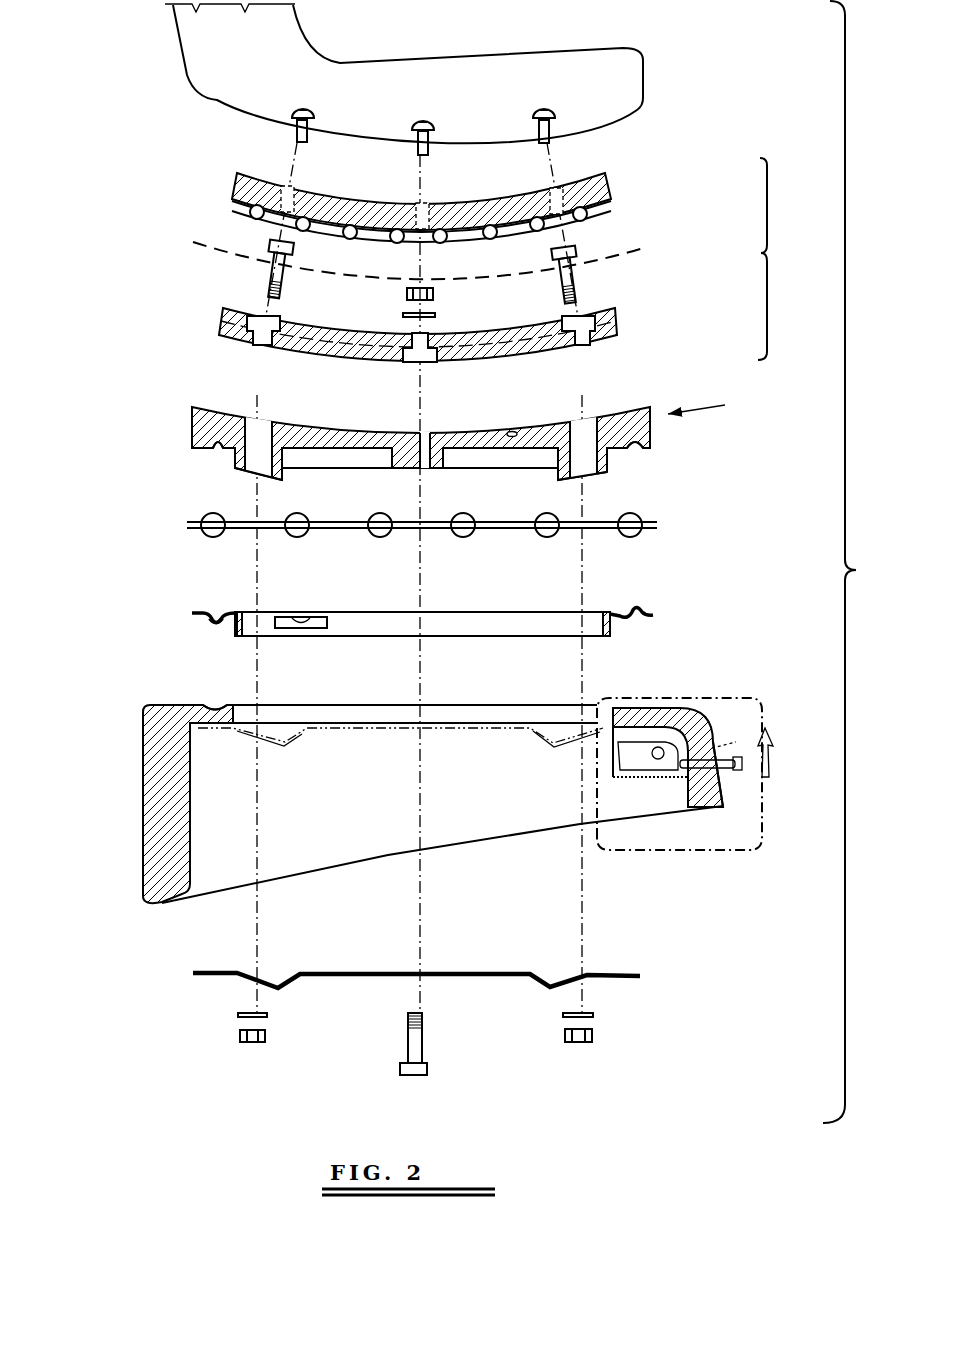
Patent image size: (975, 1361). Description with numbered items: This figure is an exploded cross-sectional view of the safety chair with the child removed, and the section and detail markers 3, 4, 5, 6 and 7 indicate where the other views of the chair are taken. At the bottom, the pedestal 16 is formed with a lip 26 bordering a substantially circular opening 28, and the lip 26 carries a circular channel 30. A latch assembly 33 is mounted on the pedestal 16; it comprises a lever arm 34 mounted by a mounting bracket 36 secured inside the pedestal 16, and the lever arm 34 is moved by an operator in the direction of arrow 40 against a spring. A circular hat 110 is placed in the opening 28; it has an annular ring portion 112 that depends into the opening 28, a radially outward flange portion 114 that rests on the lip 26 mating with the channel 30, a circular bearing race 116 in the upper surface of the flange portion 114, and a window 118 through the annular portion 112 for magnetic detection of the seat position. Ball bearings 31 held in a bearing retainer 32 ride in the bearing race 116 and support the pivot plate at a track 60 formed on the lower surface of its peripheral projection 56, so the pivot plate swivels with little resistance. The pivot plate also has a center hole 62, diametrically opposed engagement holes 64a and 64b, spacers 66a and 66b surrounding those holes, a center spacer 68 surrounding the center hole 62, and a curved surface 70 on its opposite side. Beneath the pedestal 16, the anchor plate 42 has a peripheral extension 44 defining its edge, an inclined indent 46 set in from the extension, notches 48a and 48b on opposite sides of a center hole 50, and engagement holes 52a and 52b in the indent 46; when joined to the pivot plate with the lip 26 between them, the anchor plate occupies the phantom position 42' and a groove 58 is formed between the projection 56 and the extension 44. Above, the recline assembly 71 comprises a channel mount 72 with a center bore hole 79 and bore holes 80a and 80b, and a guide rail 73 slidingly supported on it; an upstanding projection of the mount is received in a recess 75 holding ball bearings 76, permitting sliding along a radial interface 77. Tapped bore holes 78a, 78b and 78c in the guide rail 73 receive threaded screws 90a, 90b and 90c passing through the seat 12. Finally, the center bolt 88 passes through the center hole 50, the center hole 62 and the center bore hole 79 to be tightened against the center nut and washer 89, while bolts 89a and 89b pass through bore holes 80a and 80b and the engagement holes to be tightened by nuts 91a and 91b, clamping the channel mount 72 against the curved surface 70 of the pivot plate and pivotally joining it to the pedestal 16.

The seat 12 is at (650, 59).
The threaded screw 90a is at (304, 108).
The threaded screw 90b is at (424, 119).
The threaded screw 90c is at (545, 108).
The tapped bore hole 78a is at (285, 186).
The tapped bore hole 78b is at (425, 202).
The tapped bore hole 78c is at (558, 188).
The guide rail 73 is at (616, 190).
The recess 75 is at (257, 222).
The ball bearings 76 is at (306, 232).
The radial interface 77 is at (200, 242).
The bolt 89a is at (268, 265).
The bolt 89b is at (582, 276).
The nut and washer 89 is at (436, 294).
The channel mount 72 is at (624, 325).
The bore hole 80a is at (262, 338).
The bore hole 80b is at (588, 340).
The center bore hole 79 is at (425, 357).
The recline assembly 71 is at (779, 259).
The peripheral projection 56 is at (248, 321).
The groove 58 is at (232, 455).
The track 60 is at (628, 447).
The center hole 62 is at (424, 432).
The engagement hole 64a is at (262, 425).
The engagement hole 64b is at (577, 422).
The spacer 66a is at (238, 473).
The spacer 66b is at (602, 477).
The center spacer 68 is at (395, 469).
The curved surface 70 is at (511, 433).
The bearing retainer 32 is at (183, 524).
The ball bearings 31 is at (298, 536).
The circular hat 110 is at (458, 604).
The annular ring portion 112 is at (236, 629).
The flange portion 114 is at (194, 613).
The circular bearing race 116 is at (214, 612).
The window 118 is at (299, 617).
The pedestal 16 is at (460, 700).
The lip 26 is at (221, 712).
The opening 28 is at (353, 715).
The anchor plate (phantom position) 42' is at (400, 704).
The circular channel 30 is at (627, 708).
The mounting bracket 36 is at (640, 779).
The lever arm 34 is at (713, 770).
The latch assembly 33 is at (714, 814).
The arrow 40 is at (685, 774).
The anchor plate 42 is at (416, 942).
The peripheral extension 44 is at (208, 979).
The inclined indent 46 is at (300, 975).
The notch 48a is at (192, 974).
The notch 48b is at (641, 977).
The center hole 50 is at (417, 972).
The engagement hole 52a is at (253, 975).
The engagement hole 52b is at (587, 973).
The center bolt 88 is at (412, 1043).
The nut 91a is at (258, 1043).
The nut 91b is at (580, 1044).
The section line 7 is at (280, 160).
The section line 6 is at (818, 570).
The section line 3 is at (820, 687).
The section line 4 is at (727, 850).
The section line 5 is at (117, 917).